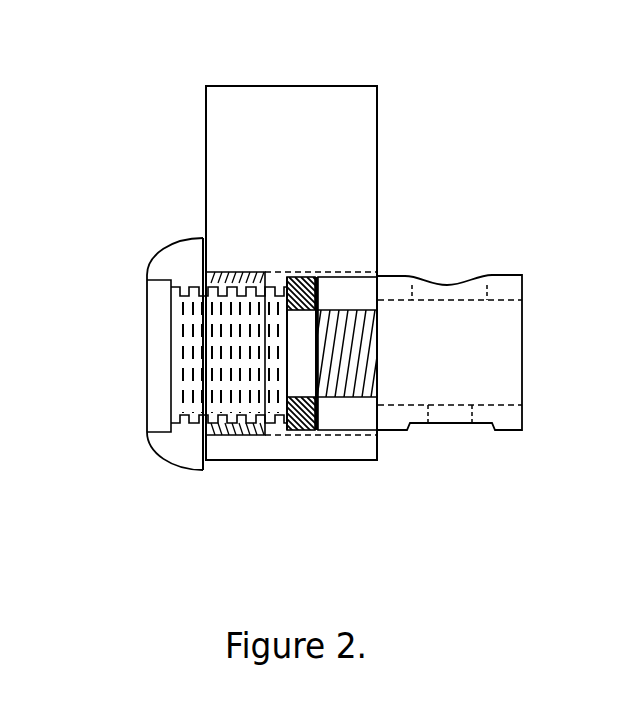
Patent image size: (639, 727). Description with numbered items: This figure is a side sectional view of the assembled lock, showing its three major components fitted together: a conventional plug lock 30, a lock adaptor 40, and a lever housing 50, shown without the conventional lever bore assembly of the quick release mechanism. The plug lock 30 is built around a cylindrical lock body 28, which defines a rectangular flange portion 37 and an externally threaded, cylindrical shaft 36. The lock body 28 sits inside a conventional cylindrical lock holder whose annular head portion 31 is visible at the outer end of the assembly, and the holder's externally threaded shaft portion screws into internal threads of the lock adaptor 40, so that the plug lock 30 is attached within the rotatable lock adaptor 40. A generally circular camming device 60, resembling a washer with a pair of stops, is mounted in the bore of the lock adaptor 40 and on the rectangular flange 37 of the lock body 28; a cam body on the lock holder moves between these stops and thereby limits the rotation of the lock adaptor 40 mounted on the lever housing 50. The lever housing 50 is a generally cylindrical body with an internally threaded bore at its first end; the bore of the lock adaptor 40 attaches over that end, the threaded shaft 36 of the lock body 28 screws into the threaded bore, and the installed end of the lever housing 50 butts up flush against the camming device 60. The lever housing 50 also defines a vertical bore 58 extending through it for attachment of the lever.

The lock body 28 is at (187, 392).
The plug lock 30 is at (158, 467).
The annular head portion 31 is at (177, 265).
The externally threaded cylindrical shaft 36 is at (346, 360).
The rectangular flange portion 37 is at (287, 433).
The lock adaptor 40 is at (301, 143).
The lever housing 50 is at (503, 285).
The vertical bore 58 is at (451, 430).
The camming device 60 is at (320, 275).